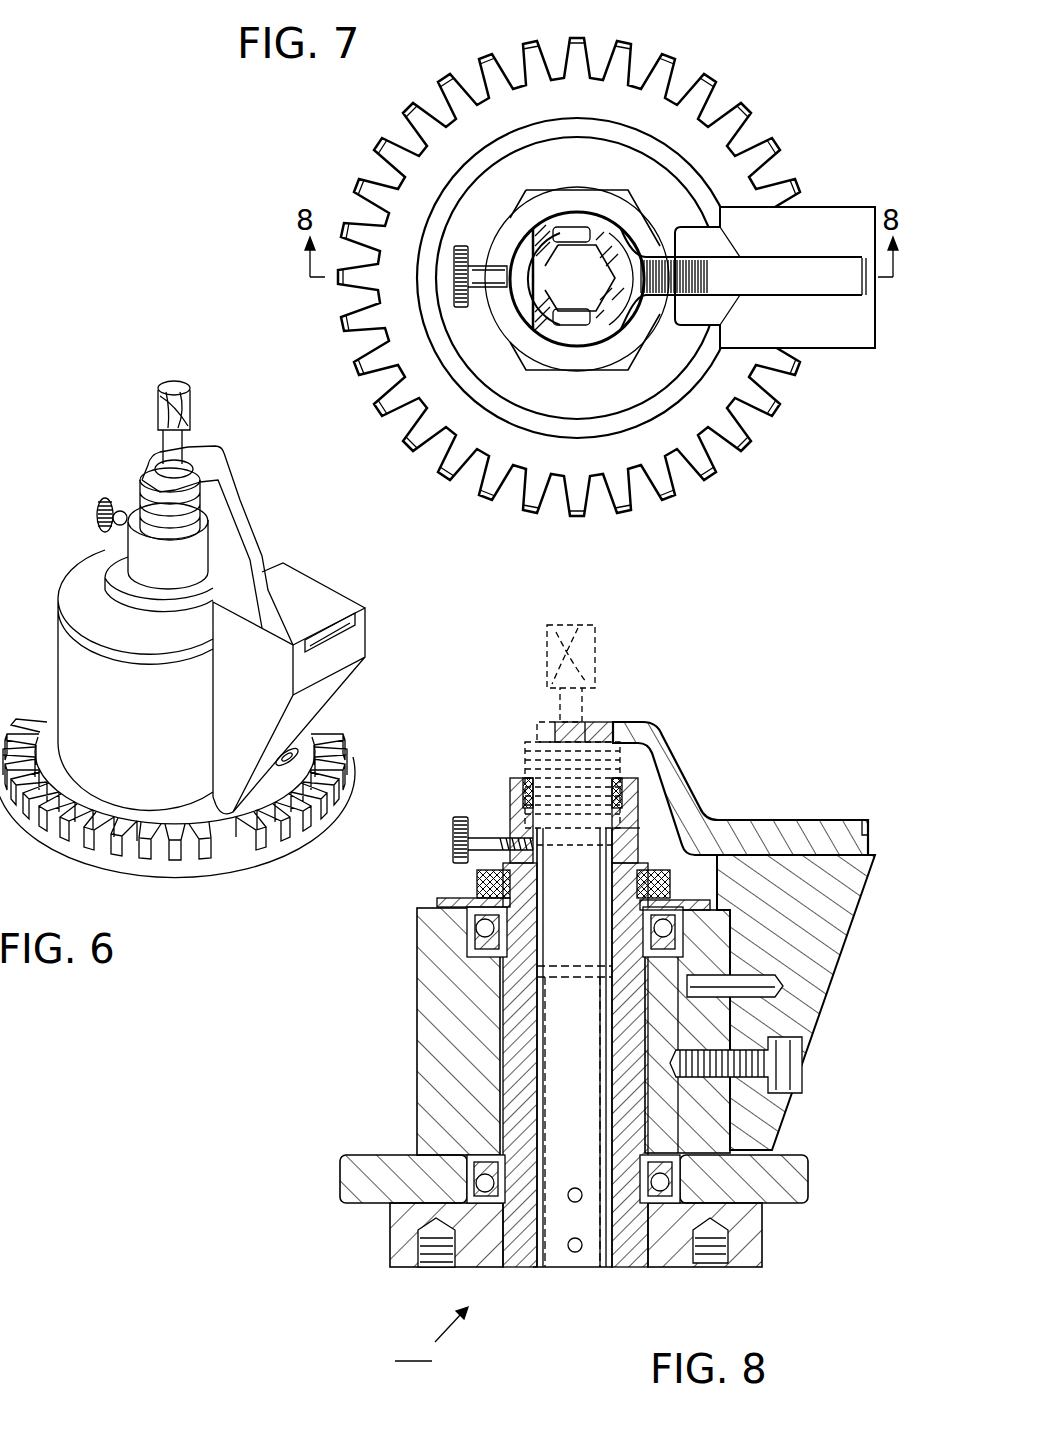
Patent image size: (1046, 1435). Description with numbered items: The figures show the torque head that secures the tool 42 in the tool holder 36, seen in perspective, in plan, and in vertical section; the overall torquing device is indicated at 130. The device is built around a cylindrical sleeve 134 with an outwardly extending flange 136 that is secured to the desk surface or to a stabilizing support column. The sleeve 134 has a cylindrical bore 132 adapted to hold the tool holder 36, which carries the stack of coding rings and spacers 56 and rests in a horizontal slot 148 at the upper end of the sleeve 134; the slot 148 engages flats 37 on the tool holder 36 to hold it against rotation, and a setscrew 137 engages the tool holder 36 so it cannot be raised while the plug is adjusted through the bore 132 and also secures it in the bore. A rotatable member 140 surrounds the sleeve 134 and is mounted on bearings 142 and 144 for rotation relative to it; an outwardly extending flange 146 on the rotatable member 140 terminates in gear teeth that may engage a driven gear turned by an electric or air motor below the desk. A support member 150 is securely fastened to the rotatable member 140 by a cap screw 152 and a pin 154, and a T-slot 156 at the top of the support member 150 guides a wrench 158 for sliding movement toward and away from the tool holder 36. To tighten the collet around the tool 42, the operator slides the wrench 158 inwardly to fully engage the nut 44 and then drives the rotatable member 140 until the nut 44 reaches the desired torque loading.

In FIG. 8, the tool holder 36 is at (580, 979).
In FIG. 8, the flats 37 is at (633, 815).
In FIG. 6, the tool 42 is at (158, 398).
In FIG. 8, the tool 42 is at (597, 648).
In FIG. 6, the nut 44 is at (160, 462).
In FIG. 8, the nut 44 is at (537, 727).
In FIG. 6, the coding rings and spacers 56 is at (145, 492).
In FIG. 8, the rotary tool head assembly 130 is at (431, 1334).
In FIG. 7, the cylindrical bore 132 is at (545, 255).
In FIG. 8, the cylindrical bore 132 is at (540, 1267).
In FIG. 7, the cylindrical sleeve 134 is at (519, 243).
In FIG. 6, the cylindrical sleeve 134 is at (128, 548).
In FIG. 8, the cylindrical sleeve 134 is at (510, 805).
In FIG. 6, the flange 136 is at (190, 877).
In FIG. 8, the flange 136 is at (668, 1268).
In FIG. 7, the setscrew 137 is at (461, 308).
In FIG. 6, the setscrew 137 is at (97, 509).
In FIG. 8, the setscrew 137 is at (453, 838).
In FIG. 7, the rotatable member 140 is at (597, 121).
In FIG. 6, the rotatable member 140 is at (58, 623).
In FIG. 8, the rotatable member 140 is at (417, 918).
In FIG. 8, the bearing 142 is at (470, 950).
In FIG. 8, the bearing 144 is at (470, 1160).
In FIG. 7, the flange 146 is at (707, 82).
In FIG. 6, the flange 146 is at (33, 828).
In FIG. 8, the flange 146 is at (340, 1172).
In FIG. 7, the horizontal slot 148 is at (546, 331).
In FIG. 8, the horizontal slot 148 is at (543, 805).
In FIG. 7, the support member 150 is at (818, 207).
In FIG. 6, the support member 150 is at (295, 572).
In FIG. 8, the support member 150 is at (858, 940).
In FIG. 6, the cap screw 152 is at (291, 748).
In FIG. 8, the cap screw 152 is at (800, 1068).
In FIG. 8, the pin 154 is at (780, 992).
In FIG. 7, the T-slot 156 is at (868, 296).
In FIG. 6, the T-slot 156 is at (357, 632).
In FIG. 8, the T-slot 156 is at (870, 845).
In FIG. 7, the wrench 158 is at (584, 221).
In FIG. 6, the wrench 158 is at (232, 510).
In FIG. 8, the wrench 158 is at (760, 820).